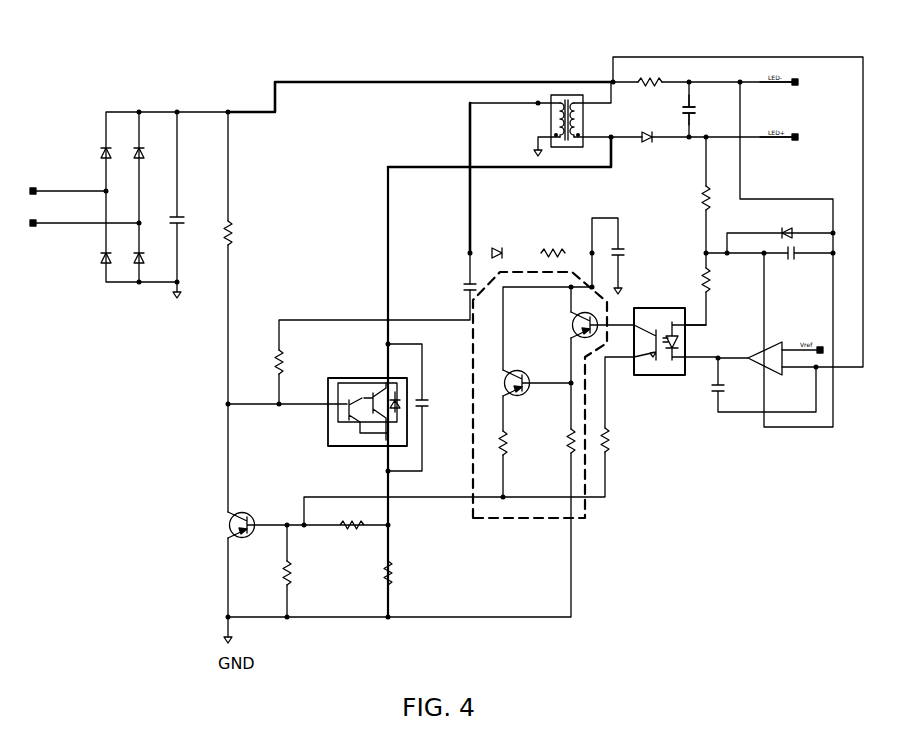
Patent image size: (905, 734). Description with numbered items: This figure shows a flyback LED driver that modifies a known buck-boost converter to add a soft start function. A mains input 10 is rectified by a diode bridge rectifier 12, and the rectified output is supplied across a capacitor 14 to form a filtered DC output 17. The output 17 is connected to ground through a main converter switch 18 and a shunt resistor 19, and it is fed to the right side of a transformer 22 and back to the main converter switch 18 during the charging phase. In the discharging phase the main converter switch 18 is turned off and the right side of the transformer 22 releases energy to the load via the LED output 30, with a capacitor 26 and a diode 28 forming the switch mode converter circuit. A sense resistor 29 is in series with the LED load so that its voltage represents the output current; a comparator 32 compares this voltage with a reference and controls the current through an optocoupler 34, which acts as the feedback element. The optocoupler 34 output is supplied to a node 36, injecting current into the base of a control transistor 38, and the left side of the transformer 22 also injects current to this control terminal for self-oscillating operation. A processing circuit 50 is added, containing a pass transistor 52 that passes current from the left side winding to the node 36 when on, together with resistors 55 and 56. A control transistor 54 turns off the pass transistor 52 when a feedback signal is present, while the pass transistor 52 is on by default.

The mains input 10 is at (26, 200).
The diode bridge rectifier 12 is at (114, 100).
The capacitor 14 is at (184, 222).
The filtered DC output 17 is at (613, 79).
The main converter switch 18 is at (363, 378).
The shunt resistor 19 is at (385, 570).
The transformer 22 is at (571, 100).
The capacitor 26 is at (687, 114).
The diode 28 is at (647, 143).
The sense resistor 29 is at (648, 87).
The LED output 30 is at (791, 105).
The comparator 32 is at (778, 346).
The optocoupler 34 is at (645, 378).
The node 36 is at (300, 522).
The control transistor 38 is at (233, 514).
The processing circuit 50 is at (578, 522).
The pass transistor 52 is at (518, 375).
The control transistor 54 is at (575, 321).
The resistor 55 is at (567, 447).
The resistor 56 is at (507, 453).